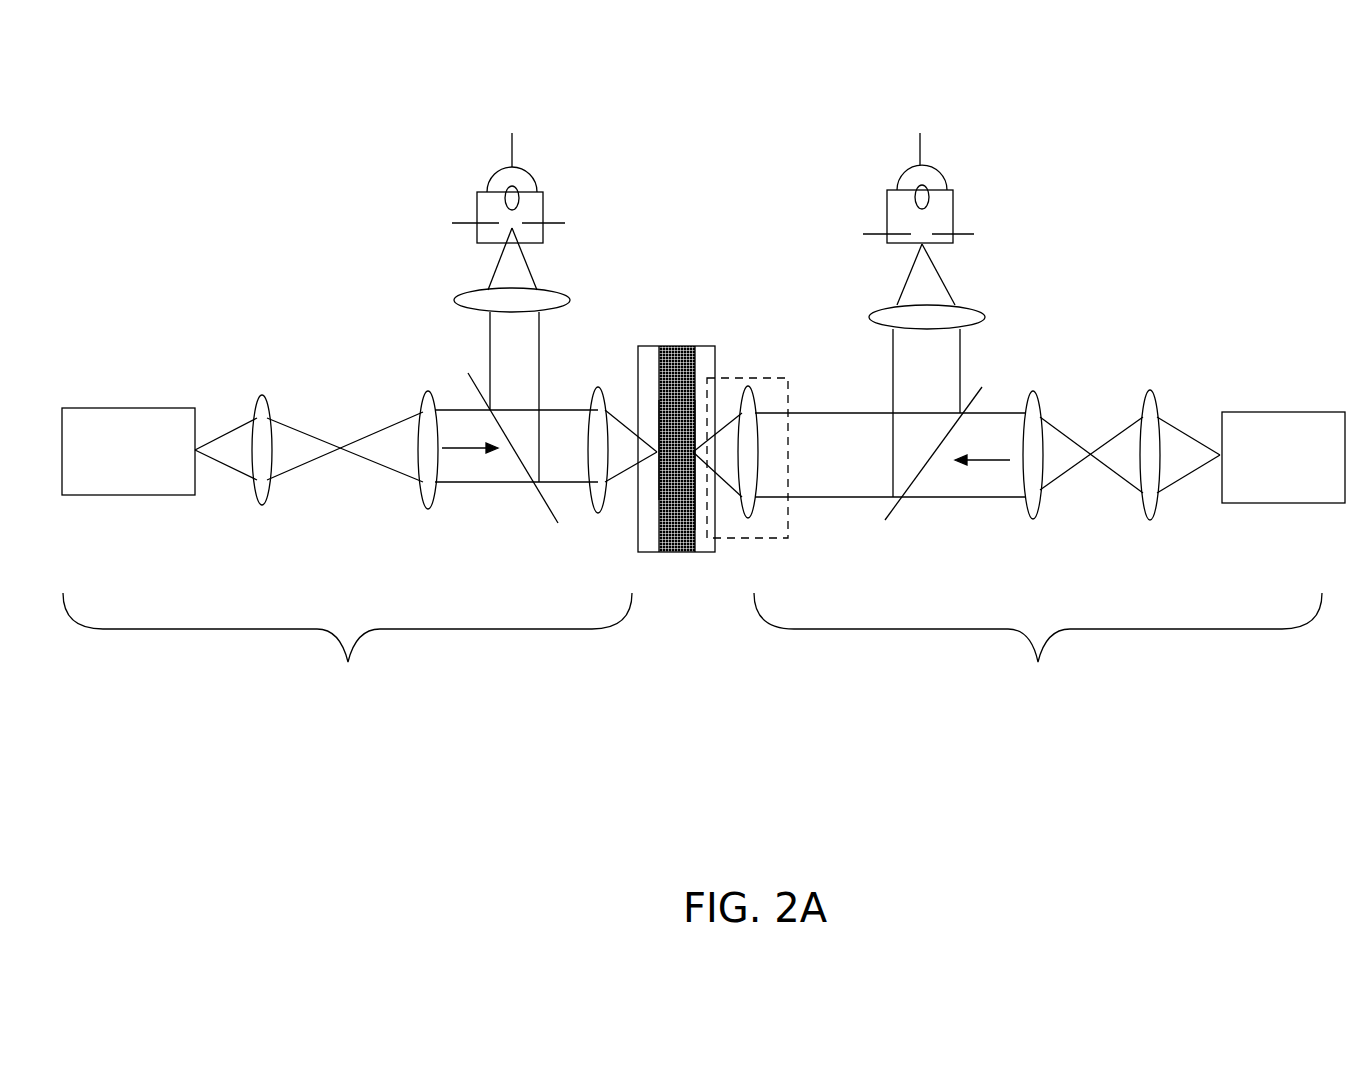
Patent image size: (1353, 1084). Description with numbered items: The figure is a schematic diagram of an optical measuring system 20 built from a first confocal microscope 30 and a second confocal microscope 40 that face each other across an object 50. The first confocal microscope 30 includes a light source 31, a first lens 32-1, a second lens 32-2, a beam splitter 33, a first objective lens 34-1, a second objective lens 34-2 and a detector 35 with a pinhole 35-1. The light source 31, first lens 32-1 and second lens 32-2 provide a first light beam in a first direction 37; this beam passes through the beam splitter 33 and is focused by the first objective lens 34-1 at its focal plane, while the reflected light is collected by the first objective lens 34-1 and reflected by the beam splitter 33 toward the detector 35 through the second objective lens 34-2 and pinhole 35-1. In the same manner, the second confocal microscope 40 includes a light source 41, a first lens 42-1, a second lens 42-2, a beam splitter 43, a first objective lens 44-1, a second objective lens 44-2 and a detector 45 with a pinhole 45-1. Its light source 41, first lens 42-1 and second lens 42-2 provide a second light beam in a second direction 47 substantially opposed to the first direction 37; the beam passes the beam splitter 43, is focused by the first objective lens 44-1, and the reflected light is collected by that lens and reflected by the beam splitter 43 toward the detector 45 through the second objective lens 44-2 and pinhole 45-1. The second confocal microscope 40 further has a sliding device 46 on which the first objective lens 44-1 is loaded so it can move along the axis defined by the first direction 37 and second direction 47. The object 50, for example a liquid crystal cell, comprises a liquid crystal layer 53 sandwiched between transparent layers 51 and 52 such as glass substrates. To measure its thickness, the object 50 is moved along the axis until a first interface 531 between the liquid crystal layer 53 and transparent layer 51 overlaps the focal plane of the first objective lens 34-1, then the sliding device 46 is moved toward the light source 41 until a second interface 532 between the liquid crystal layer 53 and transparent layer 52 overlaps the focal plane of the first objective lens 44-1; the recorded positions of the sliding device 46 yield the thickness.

The optical measuring system 20 is at (1160, 172).
The first confocal microscope 30 is at (347, 667).
The light source 31 is at (128, 451).
The first lens 32-1 is at (260, 421).
The second lens 32-2 is at (398, 430).
The beam splitter 33 is at (513, 460).
The first objective lens 34-1 is at (593, 428).
The second objective lens 34-2 is at (474, 293).
The detector 35 is at (499, 173).
The pinhole 35-1 is at (478, 222).
The first direction 37 is at (467, 452).
The second confocal microscope 40 is at (1038, 667).
The light source 41 is at (1283, 457).
The first lens 42-1 is at (1161, 431).
The second lens 42-2 is at (1051, 431).
The beam splitter 43 is at (933, 472).
The first objective lens 44-1 is at (750, 392).
The second objective lens 44-2 is at (958, 301).
The detector 45 is at (909, 173).
The pinhole 45-1 is at (888, 233).
The sliding device 46 is at (767, 538).
The second direction 47 is at (987, 464).
The object 50 is at (687, 590).
The transparent layer 51 is at (653, 348).
The transparent layer 52 is at (710, 348).
The liquid crystal layer 53 is at (677, 348).
The first interface 531 is at (659, 482).
The second interface 532 is at (692, 527).